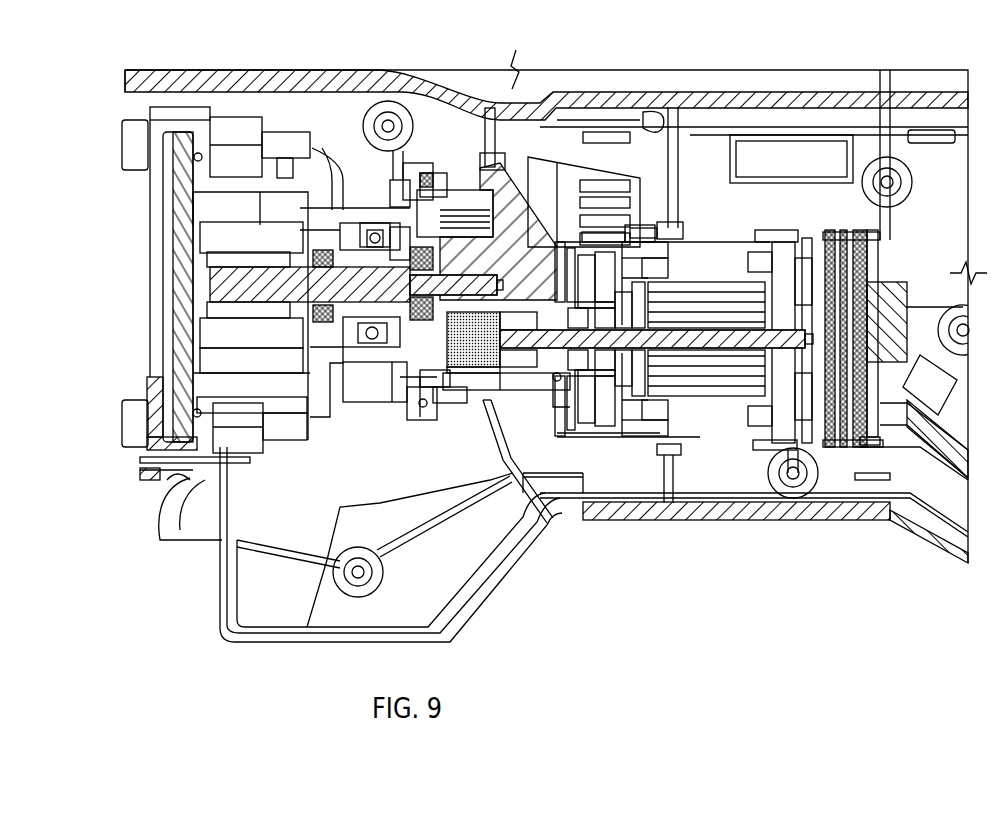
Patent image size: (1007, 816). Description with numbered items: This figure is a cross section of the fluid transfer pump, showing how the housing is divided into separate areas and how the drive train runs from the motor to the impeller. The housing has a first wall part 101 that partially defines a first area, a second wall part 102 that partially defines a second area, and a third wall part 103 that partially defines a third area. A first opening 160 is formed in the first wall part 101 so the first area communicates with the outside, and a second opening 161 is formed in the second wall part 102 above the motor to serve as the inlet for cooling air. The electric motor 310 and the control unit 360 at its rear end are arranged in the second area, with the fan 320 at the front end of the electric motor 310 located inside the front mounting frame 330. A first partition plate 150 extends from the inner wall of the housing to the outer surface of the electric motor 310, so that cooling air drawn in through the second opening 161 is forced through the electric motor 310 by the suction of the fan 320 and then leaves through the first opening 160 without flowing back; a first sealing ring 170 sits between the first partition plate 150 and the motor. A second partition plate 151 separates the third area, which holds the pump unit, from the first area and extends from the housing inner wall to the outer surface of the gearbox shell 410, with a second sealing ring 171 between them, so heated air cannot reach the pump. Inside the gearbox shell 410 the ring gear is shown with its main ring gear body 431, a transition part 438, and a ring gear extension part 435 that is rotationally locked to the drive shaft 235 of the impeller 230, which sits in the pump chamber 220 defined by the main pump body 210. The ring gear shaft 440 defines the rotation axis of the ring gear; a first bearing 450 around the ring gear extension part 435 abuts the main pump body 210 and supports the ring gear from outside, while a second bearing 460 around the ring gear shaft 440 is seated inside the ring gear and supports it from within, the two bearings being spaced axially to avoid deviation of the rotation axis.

The first wall part 101 is at (578, 92).
The second wall part 102 is at (823, 92).
The third wall part 103 is at (333, 200).
The first partition plate 150 is at (678, 128).
The second partition plate 151 is at (492, 160).
The first opening 160 is at (614, 185).
The second opening 161 is at (932, 135).
The first sealing ring 170 is at (690, 460).
The second sealing ring 171 is at (490, 410).
The main pump body 210 is at (258, 410).
The pump chamber 220 is at (185, 472).
The impeller 230 is at (225, 255).
The drive shaft 235 is at (308, 258).
The electric motor 310 is at (735, 440).
The fan 320 is at (618, 436).
The front mounting frame 330 is at (558, 418).
The control unit 360 is at (850, 447).
The gearbox shell 410 is at (475, 372).
The main ring gear body 431 is at (435, 375).
The ring gear extension part 435 is at (360, 350).
The transition part 438 is at (390, 395).
The ring gear shaft 440 is at (455, 232).
The first bearing 450 is at (366, 225).
The second bearing 460 is at (398, 222).